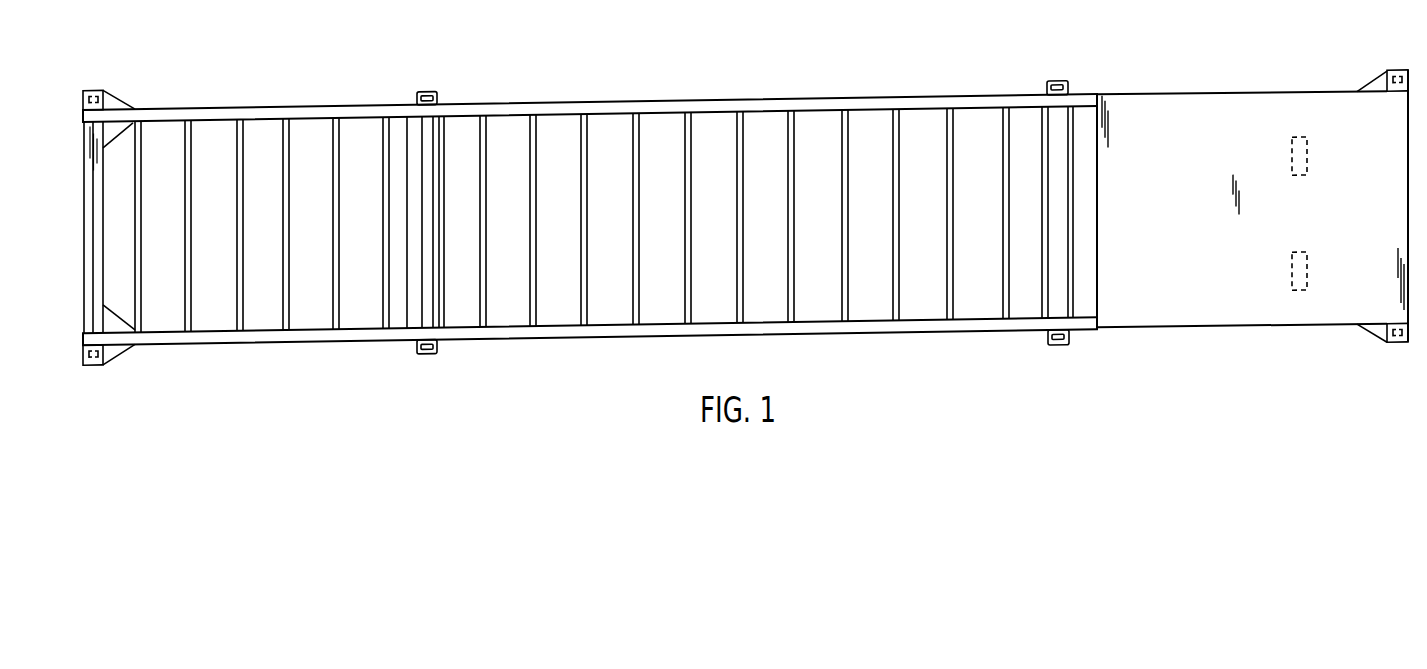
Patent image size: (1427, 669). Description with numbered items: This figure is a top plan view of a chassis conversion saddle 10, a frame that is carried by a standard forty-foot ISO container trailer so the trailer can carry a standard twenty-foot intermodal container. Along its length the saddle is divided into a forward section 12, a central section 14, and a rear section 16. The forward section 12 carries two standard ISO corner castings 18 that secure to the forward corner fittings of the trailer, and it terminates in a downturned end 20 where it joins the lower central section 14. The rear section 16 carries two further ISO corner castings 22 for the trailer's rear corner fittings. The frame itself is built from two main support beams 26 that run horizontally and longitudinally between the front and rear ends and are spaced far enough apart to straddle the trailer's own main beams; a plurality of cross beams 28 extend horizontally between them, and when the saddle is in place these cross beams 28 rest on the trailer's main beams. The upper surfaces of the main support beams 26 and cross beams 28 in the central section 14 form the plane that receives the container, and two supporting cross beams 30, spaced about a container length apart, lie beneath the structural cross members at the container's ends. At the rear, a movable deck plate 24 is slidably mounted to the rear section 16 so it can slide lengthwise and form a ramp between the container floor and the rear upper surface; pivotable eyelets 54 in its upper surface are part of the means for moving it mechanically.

The chassis conversion saddle 10 is at (655, 88).
The forward section 12 is at (253, 93).
The central section 14 is at (618, 186).
The rear section 16 is at (1252, 188).
The ISO corner castings 18 is at (97, 90).
The downturned end 20 is at (403, 95).
The ISO corner castings 22 is at (1395, 70).
The movable deck plate 24 is at (1195, 205).
The main support beams 26 is at (581, 104).
The cross beams 28 is at (333, 147).
The supporting cross beams 30 is at (440, 140).
The pivotable eyelets 54 is at (1310, 136).